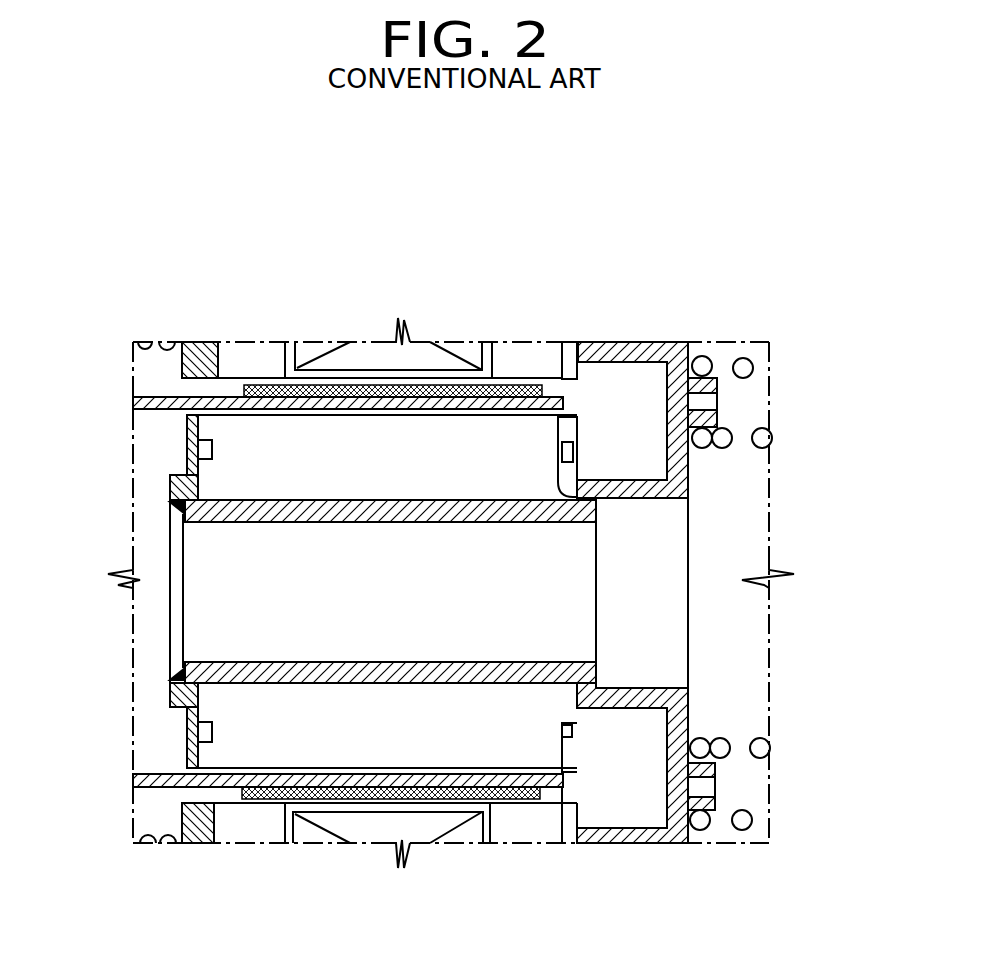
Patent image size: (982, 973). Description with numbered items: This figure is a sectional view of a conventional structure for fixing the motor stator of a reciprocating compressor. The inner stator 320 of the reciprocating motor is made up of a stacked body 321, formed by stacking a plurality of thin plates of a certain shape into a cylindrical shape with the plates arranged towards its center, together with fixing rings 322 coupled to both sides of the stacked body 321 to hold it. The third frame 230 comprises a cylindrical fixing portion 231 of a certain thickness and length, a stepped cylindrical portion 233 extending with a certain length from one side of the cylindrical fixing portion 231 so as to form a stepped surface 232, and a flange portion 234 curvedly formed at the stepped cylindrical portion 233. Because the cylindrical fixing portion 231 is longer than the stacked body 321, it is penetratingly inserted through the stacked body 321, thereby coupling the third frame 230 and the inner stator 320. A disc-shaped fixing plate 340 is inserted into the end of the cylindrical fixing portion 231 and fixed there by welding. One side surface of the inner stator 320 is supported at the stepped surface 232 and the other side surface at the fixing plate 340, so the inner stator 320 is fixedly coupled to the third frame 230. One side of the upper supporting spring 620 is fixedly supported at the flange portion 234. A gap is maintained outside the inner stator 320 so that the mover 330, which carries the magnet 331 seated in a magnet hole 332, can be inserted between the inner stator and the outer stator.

The third frame 230 is at (693, 483).
The cylindrical fixing portion 231 is at (480, 673).
The stepped surface 232 is at (562, 417).
The stepped cylindrical portion 233 is at (622, 702).
The flange portion 234 is at (682, 350).
The inner stator 320 is at (583, 427).
The stacked body 321 is at (333, 768).
The fixing rings 322 is at (210, 742).
The mover 330 is at (238, 388).
The magnet 331 is at (428, 385).
The magnet hole 332 is at (480, 385).
The fixing plate 340 is at (183, 450).
The upper supporting spring 620 is at (771, 748).